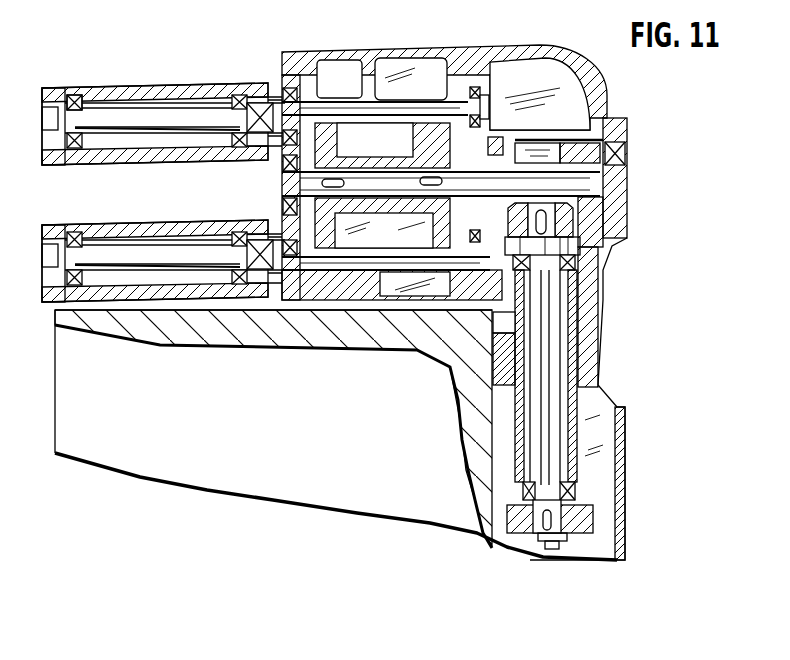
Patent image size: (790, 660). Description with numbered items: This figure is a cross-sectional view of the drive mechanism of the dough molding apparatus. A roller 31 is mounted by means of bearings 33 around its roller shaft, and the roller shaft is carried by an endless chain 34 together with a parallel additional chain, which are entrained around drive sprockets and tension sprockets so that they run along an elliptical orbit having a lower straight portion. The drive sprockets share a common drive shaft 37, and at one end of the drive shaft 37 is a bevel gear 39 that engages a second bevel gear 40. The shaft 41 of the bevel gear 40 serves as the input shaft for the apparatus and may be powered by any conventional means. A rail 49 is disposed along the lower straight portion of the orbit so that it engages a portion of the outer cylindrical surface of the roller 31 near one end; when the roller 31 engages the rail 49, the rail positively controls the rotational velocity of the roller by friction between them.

The roller 31 is at (120, 85).
The bearing 33 is at (69, 94).
The endless chain 34 is at (335, 130).
The drive shaft 37 is at (397, 188).
The bevel gear 39 is at (563, 147).
The bevel gear 40 is at (575, 225).
The shaft 41 is at (550, 332).
The rail 49 is at (273, 288).